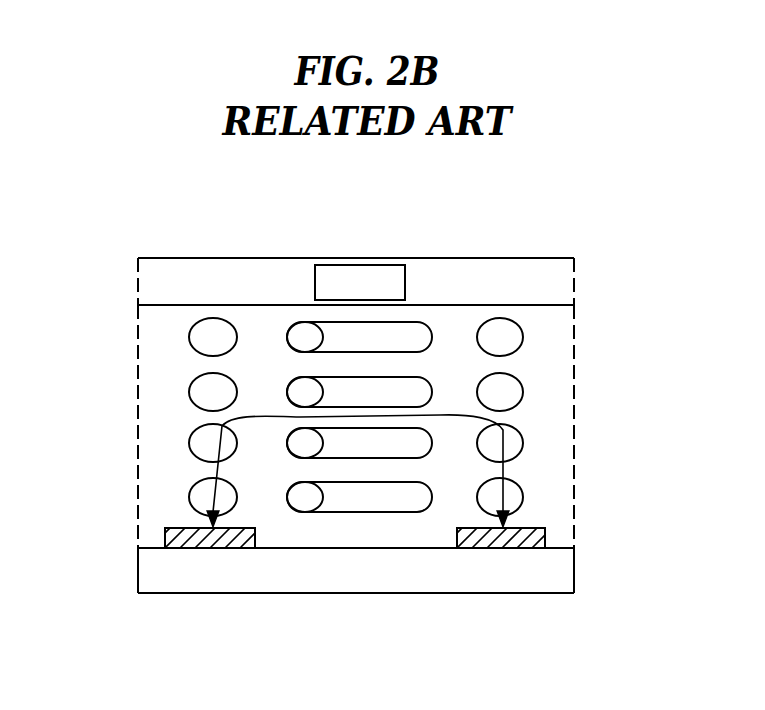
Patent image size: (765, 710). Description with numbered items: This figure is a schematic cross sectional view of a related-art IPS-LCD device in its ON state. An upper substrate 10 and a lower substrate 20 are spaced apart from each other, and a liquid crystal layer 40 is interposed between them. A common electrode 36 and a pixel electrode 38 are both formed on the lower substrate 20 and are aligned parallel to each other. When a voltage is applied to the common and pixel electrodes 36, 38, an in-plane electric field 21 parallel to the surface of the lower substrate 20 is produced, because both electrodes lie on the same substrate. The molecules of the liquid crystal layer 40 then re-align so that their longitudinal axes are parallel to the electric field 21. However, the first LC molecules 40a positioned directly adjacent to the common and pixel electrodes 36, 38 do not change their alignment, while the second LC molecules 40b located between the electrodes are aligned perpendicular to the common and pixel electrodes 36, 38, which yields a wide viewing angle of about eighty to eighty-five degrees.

The upper substrate 10 is at (596, 258).
The lower substrate 20 is at (596, 548).
The electric field 21 is at (456, 415).
The common electrode 36 is at (219, 549).
The pixel electrode 38 is at (500, 549).
The liquid crystal layer 40 is at (349, 426).
The first LC molecules 40a is at (205, 395).
The second LC molecules 40b is at (297, 385).